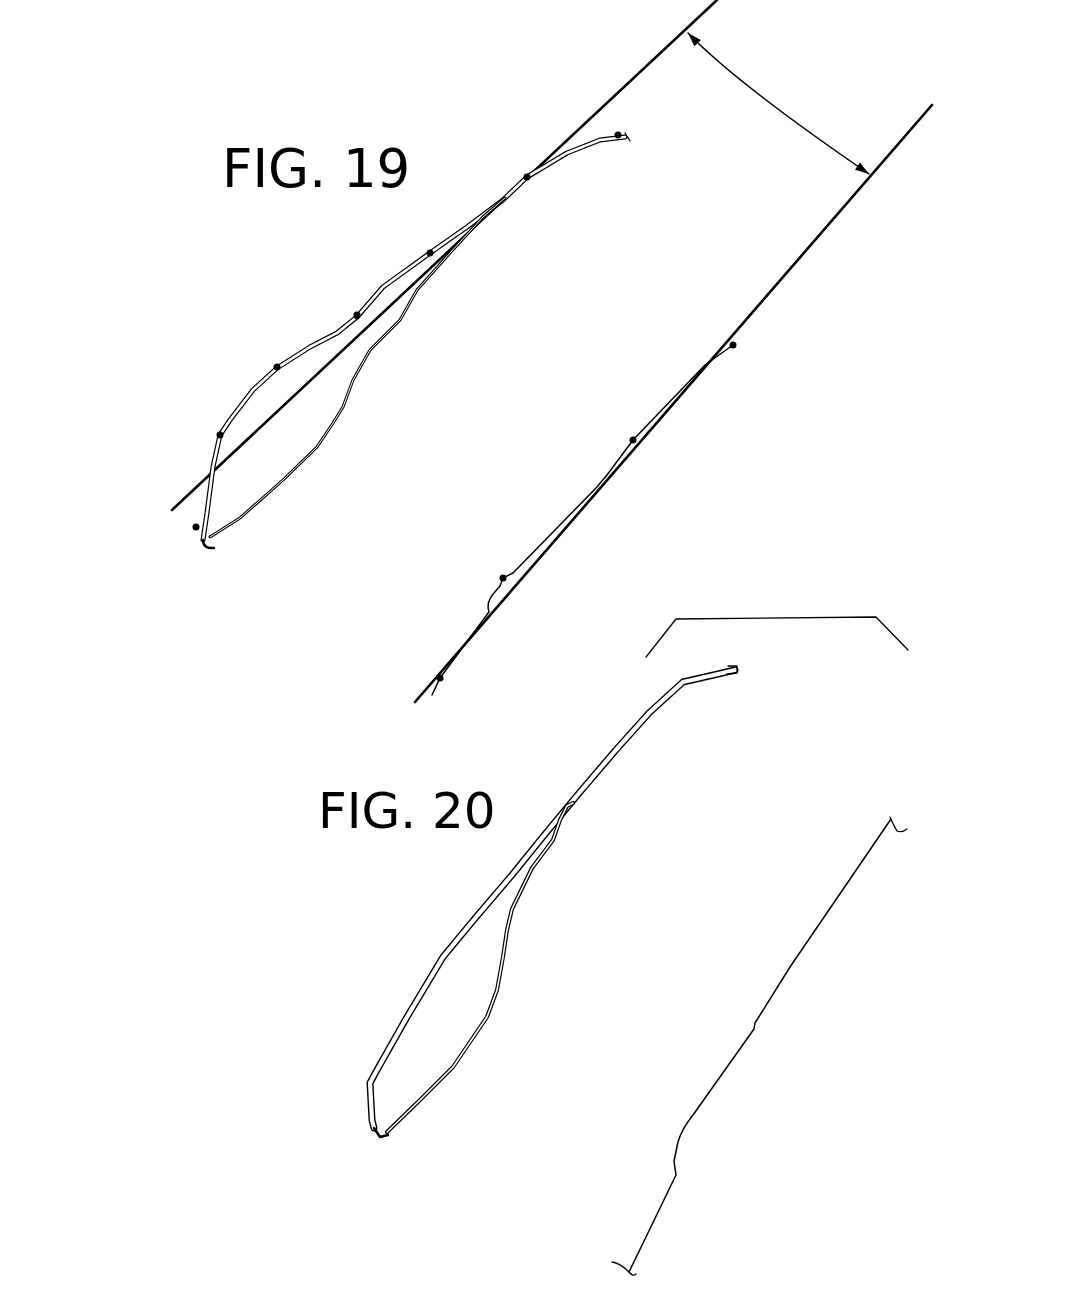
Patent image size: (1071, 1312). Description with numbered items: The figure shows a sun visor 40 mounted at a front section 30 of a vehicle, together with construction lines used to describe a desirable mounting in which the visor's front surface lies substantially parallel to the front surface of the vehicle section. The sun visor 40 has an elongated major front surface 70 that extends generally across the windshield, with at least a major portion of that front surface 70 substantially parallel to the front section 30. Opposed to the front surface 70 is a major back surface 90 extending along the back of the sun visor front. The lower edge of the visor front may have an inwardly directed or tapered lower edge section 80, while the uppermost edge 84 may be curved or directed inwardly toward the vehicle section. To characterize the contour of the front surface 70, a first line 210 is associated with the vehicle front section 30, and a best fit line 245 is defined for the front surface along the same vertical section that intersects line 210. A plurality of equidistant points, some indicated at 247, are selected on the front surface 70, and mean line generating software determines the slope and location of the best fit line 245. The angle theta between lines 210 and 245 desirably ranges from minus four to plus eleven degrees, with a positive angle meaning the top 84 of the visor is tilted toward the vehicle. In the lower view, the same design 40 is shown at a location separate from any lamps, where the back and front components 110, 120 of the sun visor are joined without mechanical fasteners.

In FIG. 19, the front section 30 is at (555, 527).
In FIG. 20, the front section 30 is at (792, 960).
In FIG. 19, the sun visor 40 is at (390, 344).
In FIG. 20, the sun visor 40 is at (540, 914).
In FIG. 19, the front surface 70 is at (420, 322).
In FIG. 19, the lower edge section 80 is at (198, 518).
In FIG. 20, the lower edge section 80 is at (370, 1110).
In FIG. 19, the uppermost edge 84 is at (623, 137).
In FIG. 20, the uppermost edge 84 is at (728, 667).
In FIG. 19, the back surface 90 is at (507, 193).
In FIG. 19, the back component 110 is at (240, 408).
In FIG. 20, the back component 110 is at (407, 1015).
In FIG. 19, the front component 120 is at (337, 433).
In FIG. 20, the front component 120 is at (460, 1057).
In FIG. 19, the first line 210 is at (763, 302).
In FIG. 19, the best fit line 245 is at (641, 68).
In FIG. 19, the points 247 is at (430, 253).